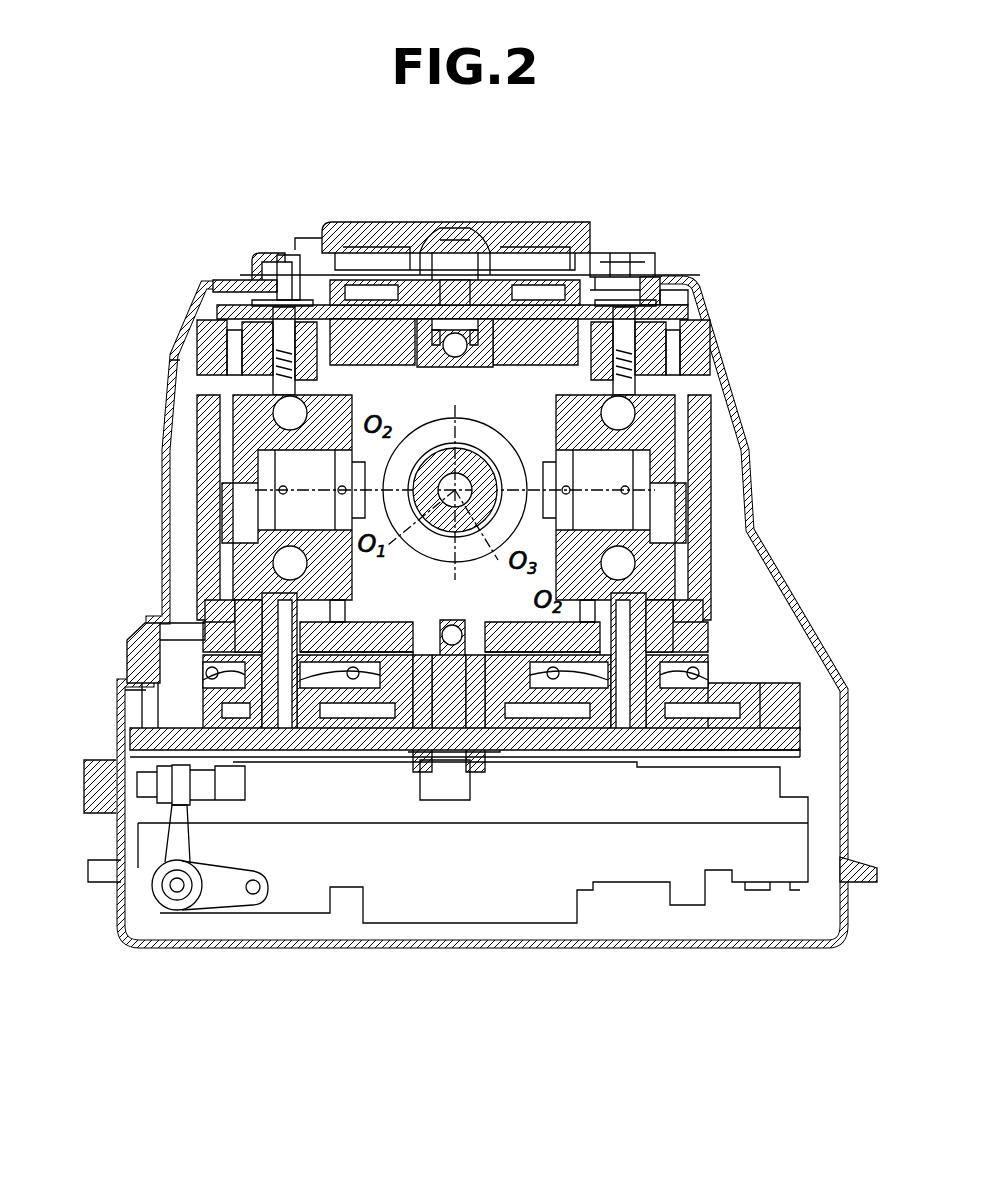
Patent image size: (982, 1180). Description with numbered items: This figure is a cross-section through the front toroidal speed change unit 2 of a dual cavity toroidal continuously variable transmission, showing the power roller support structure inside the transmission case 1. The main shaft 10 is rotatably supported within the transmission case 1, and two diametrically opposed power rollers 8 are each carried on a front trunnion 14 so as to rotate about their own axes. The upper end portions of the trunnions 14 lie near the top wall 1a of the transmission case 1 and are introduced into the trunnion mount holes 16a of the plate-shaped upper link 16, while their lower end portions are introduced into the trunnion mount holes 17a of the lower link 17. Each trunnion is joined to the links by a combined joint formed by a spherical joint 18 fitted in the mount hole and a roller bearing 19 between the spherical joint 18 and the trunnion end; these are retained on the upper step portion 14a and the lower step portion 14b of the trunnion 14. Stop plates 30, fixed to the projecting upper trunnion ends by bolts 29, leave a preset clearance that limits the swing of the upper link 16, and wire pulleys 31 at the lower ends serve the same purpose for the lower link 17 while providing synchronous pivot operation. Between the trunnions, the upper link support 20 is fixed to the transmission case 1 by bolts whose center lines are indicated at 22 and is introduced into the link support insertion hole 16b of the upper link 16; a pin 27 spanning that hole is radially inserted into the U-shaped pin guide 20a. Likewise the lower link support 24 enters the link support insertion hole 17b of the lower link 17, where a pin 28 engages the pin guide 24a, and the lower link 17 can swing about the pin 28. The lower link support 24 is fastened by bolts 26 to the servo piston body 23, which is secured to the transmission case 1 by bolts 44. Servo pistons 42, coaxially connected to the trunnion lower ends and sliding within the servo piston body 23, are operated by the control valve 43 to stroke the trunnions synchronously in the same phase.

The transmission case 1 is at (163, 362).
The top wall 1a is at (310, 244).
The front toroidal speed change unit 2 is at (575, 293).
The power roller 8 is at (272, 413).
The main shaft 10 is at (470, 468).
The front trunnion 14 is at (166, 443).
The upper step portion 14a is at (212, 368).
The lower step portion 14b is at (200, 560).
The upper link 16 is at (240, 330).
The trunnion mount hole 16a is at (248, 320).
The link support insertion hole 16b is at (410, 362).
The lower link 17 is at (160, 628).
The trunnion mount hole 17a is at (236, 600).
The link support insertion hole 17b is at (396, 640).
The spherical joint 18 is at (238, 350).
The roller bearing 19 is at (262, 318).
The upper link support 20 is at (430, 365).
The pin guide 20a is at (456, 358).
The bolt center line 22 is at (455, 226).
The servo piston body 23 is at (132, 738).
The lower link support 24 is at (478, 626).
The pin guide 24a is at (418, 626).
The bolt 26 is at (472, 775).
The pin 27 is at (480, 352).
The pin 28 is at (453, 620).
The bolt 29 is at (268, 283).
The stop plate 30 is at (330, 290).
The wire pulley 31 is at (203, 668).
The servo piston 42 is at (242, 740).
The control valve 43 is at (432, 908).
The bolt 44 is at (112, 846).